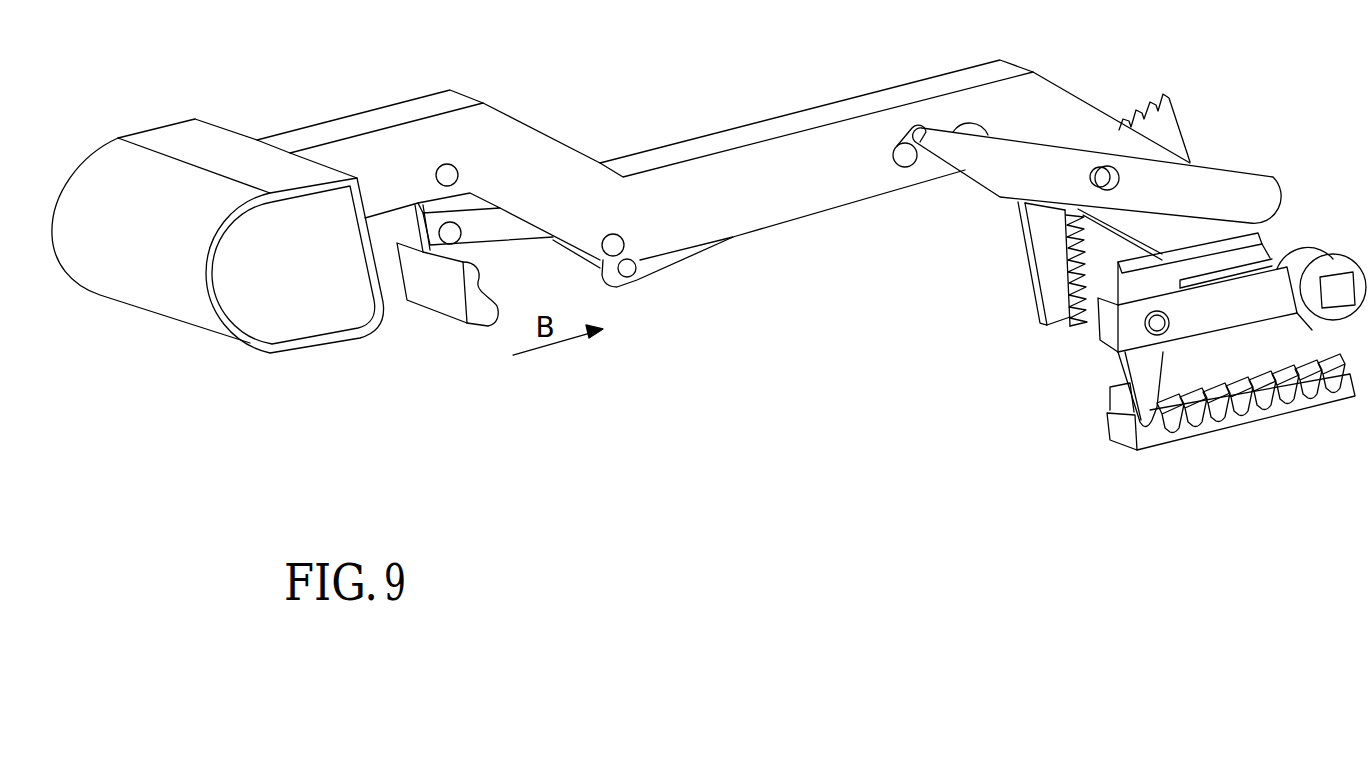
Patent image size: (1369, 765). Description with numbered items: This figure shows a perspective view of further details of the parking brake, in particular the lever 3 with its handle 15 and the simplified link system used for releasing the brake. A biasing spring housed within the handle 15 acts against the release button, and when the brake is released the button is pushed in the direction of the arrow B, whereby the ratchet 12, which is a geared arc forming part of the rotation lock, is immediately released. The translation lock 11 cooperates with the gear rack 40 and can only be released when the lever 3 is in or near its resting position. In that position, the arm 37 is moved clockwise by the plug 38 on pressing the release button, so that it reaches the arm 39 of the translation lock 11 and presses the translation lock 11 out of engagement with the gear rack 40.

The lever 3 is at (695, 131).
The translation lock 11 is at (1120, 380).
The ratchet 12 is at (1167, 130).
The handle 15 is at (163, 328).
The arm 37 is at (1243, 183).
The plug 38 is at (920, 162).
The arm of the translation lock 39 is at (1260, 243).
The gear rack 40 is at (1267, 413).